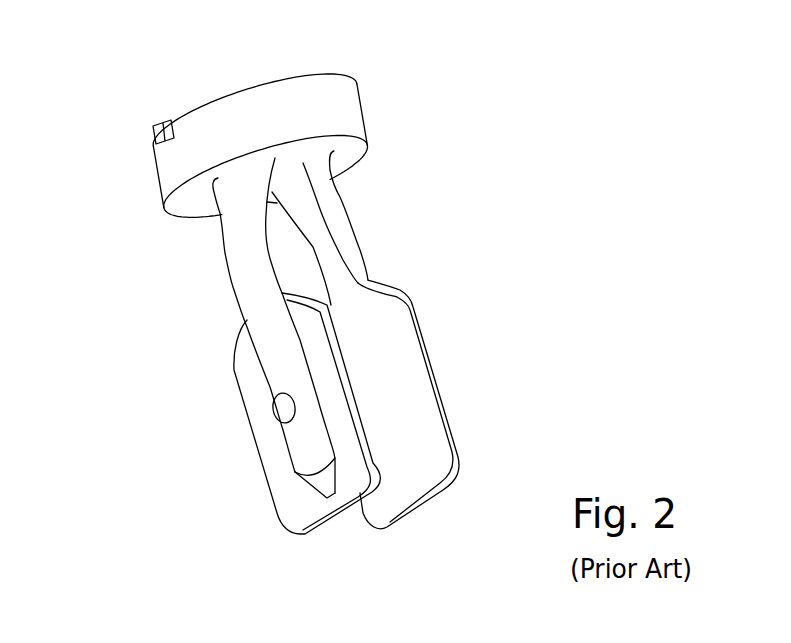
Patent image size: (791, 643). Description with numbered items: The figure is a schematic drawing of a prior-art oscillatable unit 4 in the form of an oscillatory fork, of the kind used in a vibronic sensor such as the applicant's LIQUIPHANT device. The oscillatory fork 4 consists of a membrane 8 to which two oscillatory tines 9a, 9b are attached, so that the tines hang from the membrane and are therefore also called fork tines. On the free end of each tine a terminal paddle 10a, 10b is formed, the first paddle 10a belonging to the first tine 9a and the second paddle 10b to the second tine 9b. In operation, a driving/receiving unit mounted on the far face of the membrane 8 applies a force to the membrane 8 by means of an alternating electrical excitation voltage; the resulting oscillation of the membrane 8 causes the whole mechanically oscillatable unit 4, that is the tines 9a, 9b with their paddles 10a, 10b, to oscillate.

The oscillatable unit 4 is at (138, 92).
The membrane 8 is at (223, 93).
The oscillatory tine 9a is at (237, 290).
The oscillatory tine 9b is at (357, 245).
The terminal paddle 10a is at (278, 453).
The terminal paddle 10b is at (462, 463).